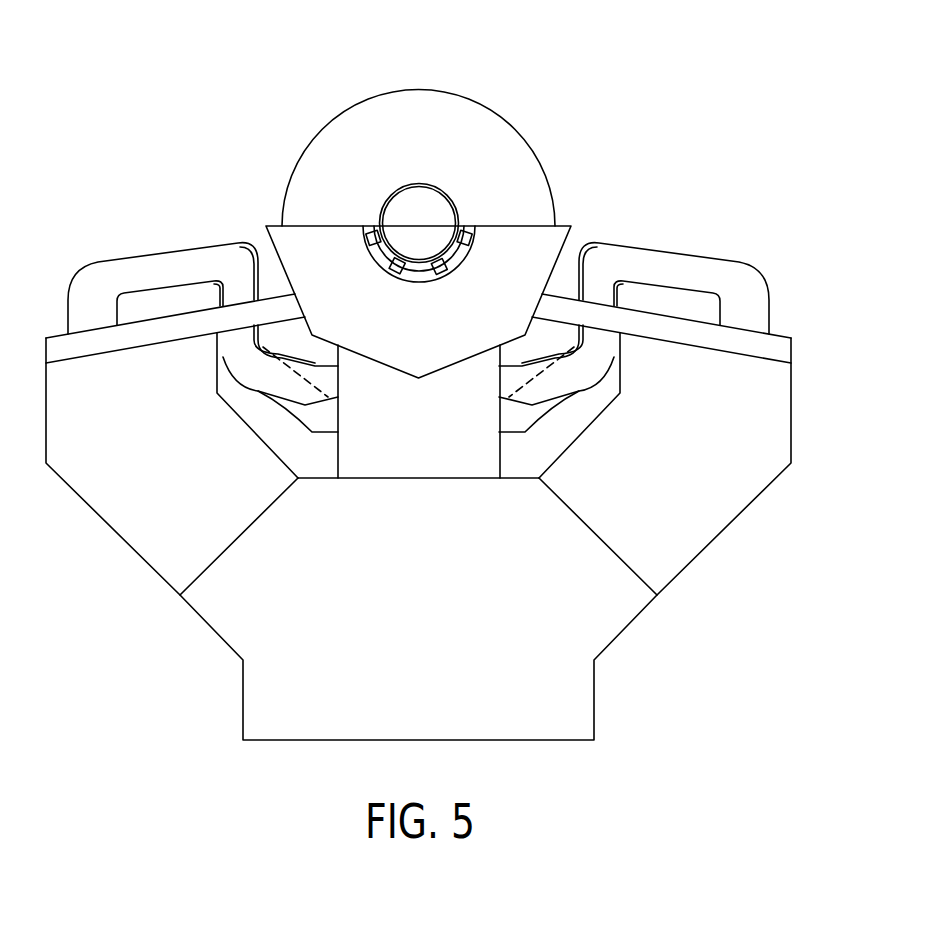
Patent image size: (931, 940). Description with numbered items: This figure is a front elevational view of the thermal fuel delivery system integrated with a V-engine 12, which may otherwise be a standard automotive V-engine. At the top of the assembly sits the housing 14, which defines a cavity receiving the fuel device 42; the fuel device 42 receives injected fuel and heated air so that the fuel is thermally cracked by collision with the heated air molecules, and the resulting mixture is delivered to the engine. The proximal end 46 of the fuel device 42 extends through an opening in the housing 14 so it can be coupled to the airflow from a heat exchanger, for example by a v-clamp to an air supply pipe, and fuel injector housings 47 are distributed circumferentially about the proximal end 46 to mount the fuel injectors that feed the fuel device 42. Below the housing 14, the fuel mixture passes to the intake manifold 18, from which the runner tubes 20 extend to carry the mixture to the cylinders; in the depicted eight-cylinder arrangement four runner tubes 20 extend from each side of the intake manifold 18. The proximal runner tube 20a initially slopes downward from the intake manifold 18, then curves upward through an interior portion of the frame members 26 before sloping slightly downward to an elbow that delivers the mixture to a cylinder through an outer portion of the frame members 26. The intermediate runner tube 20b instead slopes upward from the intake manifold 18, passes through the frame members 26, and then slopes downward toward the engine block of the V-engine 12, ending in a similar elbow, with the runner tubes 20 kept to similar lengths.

The V-engine 12 is at (766, 494).
The housing 14 is at (574, 231).
The intake manifold 18 is at (500, 448).
The runner tubes 20 is at (422, 338).
The proximal runner tube 20a is at (252, 392).
The intermediate runner tube 20b is at (549, 410).
The frame members 26 is at (793, 355).
The fuel device 42 is at (486, 106).
The proximal end 46 is at (456, 214).
The fuel injector housings 47 is at (466, 243).